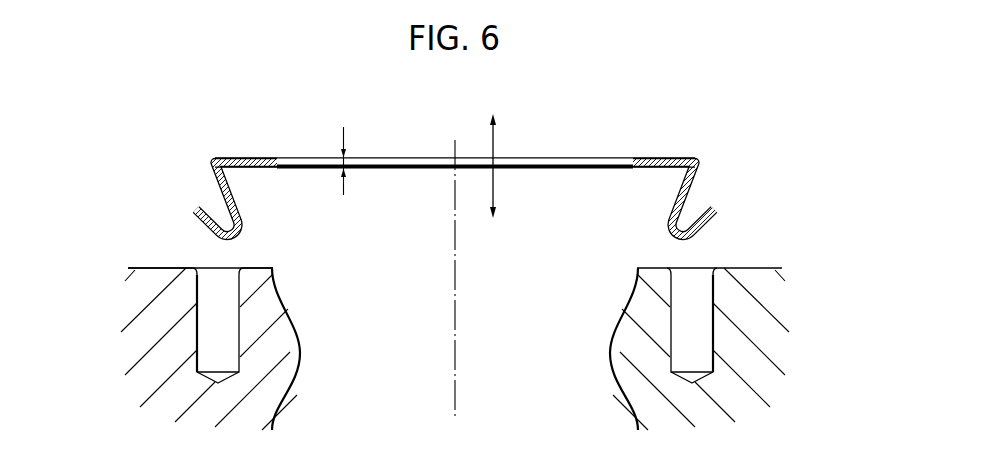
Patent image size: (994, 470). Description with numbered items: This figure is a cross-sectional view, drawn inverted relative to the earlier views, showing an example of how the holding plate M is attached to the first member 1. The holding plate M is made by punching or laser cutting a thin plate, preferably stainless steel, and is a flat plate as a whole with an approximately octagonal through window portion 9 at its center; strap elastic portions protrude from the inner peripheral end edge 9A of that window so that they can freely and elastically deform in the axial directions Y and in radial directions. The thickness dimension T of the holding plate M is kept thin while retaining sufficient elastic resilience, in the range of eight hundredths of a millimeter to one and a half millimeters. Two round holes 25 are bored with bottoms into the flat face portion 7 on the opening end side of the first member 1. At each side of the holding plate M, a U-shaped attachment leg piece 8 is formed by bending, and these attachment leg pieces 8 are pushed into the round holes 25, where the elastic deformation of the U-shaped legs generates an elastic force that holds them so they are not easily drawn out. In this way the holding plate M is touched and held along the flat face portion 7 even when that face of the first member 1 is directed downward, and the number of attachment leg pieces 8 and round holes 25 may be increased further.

The first member 1 is at (112, 383).
The flat face portion 7 is at (146, 268).
The attachment leg pieces 8 is at (202, 228).
The through window portion 9 is at (575, 157).
The inner peripheral end edge 9A is at (627, 158).
The round holes 25 is at (239, 290).
The holding plate M is at (267, 158).
The thickness dimension T is at (354, 156).
The axial directions Y is at (505, 159).